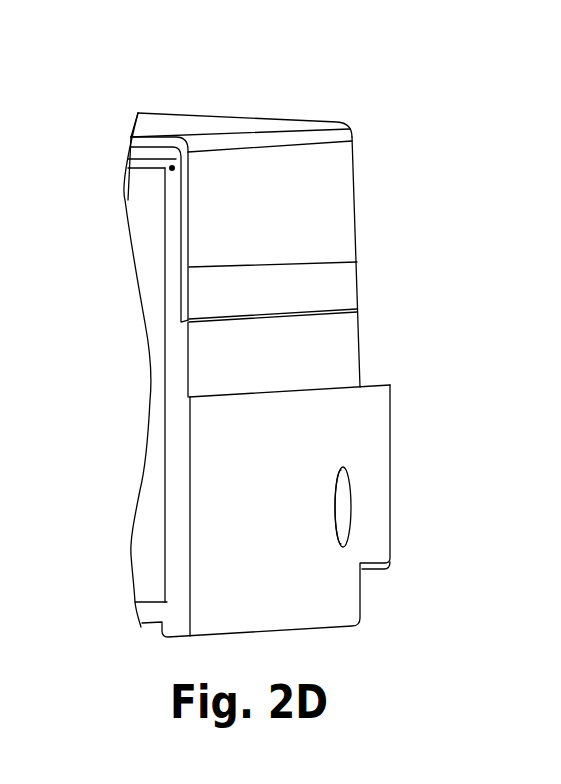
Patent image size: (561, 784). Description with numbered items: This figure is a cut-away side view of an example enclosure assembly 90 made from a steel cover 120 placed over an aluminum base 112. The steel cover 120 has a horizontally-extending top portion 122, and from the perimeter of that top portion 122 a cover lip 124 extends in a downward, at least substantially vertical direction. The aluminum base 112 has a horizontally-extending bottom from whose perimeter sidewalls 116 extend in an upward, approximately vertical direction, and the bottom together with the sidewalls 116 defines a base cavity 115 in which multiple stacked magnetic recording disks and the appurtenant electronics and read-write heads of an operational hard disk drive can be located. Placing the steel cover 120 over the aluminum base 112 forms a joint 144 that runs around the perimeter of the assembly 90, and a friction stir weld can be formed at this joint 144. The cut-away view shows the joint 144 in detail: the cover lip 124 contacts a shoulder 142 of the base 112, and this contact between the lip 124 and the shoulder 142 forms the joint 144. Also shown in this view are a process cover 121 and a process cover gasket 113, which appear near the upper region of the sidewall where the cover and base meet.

The assembly 90 is at (264, 328).
The aluminum base 112 is at (297, 511).
The process cover gasket 113 is at (205, 120).
The base cavity 115 is at (112, 370).
The sidewalls 116 is at (329, 364).
The steel cover 120 is at (240, 101).
The process cover 121 is at (130, 226).
The horizontally-extending top portion 122 is at (241, 96).
The cover lip 124 is at (304, 262).
The shoulder 142 is at (317, 269).
The joint 144 is at (323, 323).